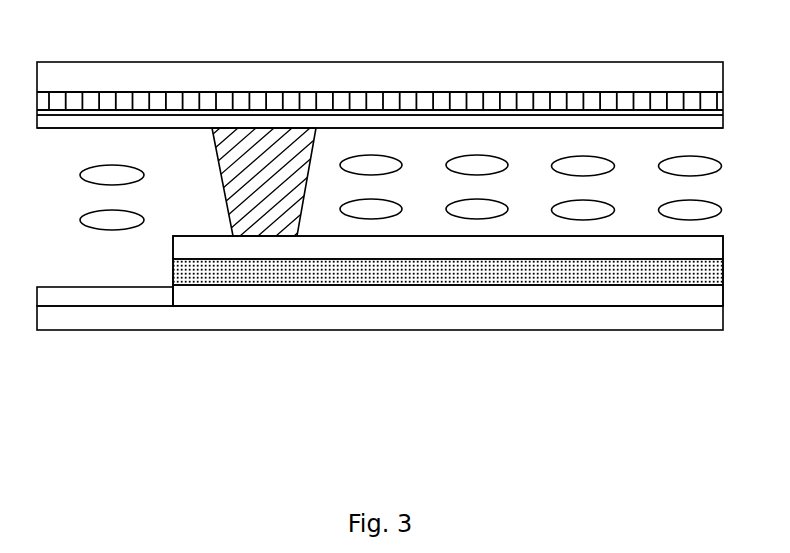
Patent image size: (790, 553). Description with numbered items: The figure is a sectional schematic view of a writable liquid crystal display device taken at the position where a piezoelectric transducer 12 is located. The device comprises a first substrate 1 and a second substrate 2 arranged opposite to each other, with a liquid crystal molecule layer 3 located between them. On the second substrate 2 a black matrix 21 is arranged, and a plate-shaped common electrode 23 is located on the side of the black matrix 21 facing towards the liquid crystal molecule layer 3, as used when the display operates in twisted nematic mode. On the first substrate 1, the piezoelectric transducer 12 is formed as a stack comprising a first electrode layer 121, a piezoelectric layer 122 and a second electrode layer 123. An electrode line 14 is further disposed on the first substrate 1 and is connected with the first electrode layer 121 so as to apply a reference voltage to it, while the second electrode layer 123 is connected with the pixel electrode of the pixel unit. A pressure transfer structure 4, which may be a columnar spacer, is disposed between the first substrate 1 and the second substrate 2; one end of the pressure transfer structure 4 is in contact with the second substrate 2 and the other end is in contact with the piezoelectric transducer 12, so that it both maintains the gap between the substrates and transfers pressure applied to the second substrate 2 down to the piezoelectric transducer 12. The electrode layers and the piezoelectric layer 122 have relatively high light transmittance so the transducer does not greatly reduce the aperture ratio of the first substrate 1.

The first substrate 1 is at (232, 315).
The second substrate 2 is at (337, 80).
The black matrix 21 is at (425, 105).
The common electrode 23 is at (518, 122).
The liquid crystal molecule layer 3 is at (585, 165).
The pressure transfer structure 4 is at (255, 150).
The piezoelectric transducer 12 is at (166, 257).
The first electrode layer 121 is at (310, 297).
The piezoelectric layer 122 is at (400, 267).
The second electrode layer 123 is at (498, 250).
The electrode line 14 is at (107, 298).